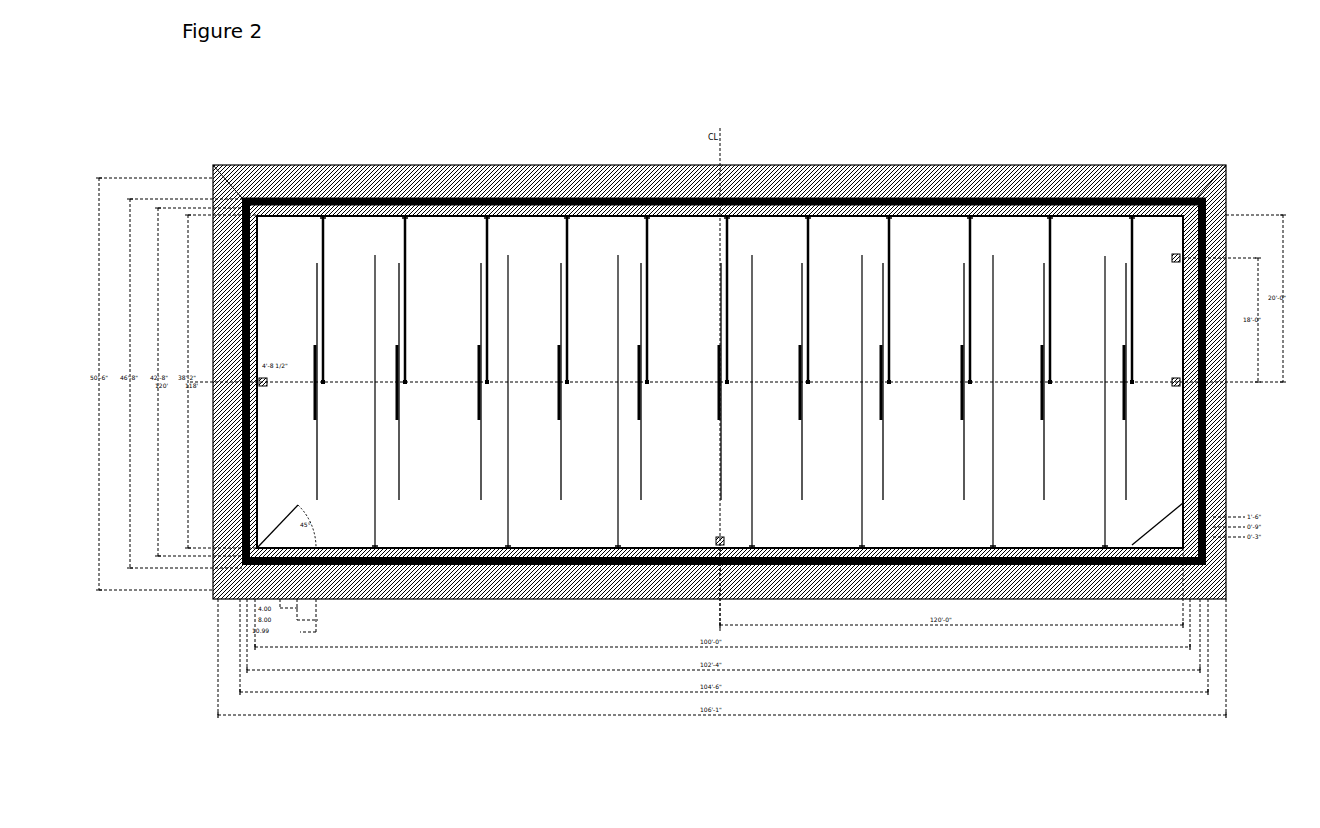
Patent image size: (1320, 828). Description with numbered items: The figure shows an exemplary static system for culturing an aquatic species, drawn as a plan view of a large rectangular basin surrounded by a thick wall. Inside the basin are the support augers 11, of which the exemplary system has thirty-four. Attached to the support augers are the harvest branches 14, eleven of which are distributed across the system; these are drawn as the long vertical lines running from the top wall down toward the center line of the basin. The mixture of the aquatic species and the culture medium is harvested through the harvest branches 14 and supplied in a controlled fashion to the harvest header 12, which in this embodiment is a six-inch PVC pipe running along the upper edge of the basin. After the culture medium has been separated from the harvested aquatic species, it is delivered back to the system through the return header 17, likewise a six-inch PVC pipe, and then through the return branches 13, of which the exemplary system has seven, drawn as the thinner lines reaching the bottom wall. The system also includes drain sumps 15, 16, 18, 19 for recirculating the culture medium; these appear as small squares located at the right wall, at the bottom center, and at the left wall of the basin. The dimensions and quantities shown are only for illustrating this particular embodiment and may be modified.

The support augers 11 is at (477, 215).
The harvest header 12 is at (790, 215).
The return branches 13 is at (1105, 253).
The harvest branches 14 is at (1133, 243).
The drain sump 15 is at (1212, 216).
The drain sump 16 is at (1183, 384).
The return header 17 is at (1183, 503).
The drain sump 18 is at (707, 531).
The drain sump 19 is at (272, 396).